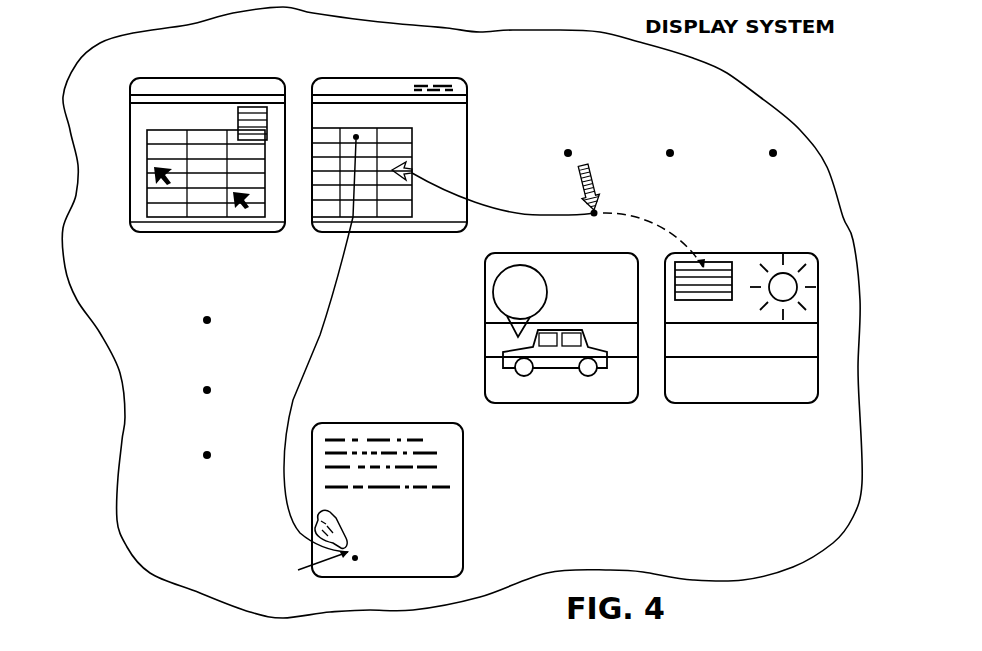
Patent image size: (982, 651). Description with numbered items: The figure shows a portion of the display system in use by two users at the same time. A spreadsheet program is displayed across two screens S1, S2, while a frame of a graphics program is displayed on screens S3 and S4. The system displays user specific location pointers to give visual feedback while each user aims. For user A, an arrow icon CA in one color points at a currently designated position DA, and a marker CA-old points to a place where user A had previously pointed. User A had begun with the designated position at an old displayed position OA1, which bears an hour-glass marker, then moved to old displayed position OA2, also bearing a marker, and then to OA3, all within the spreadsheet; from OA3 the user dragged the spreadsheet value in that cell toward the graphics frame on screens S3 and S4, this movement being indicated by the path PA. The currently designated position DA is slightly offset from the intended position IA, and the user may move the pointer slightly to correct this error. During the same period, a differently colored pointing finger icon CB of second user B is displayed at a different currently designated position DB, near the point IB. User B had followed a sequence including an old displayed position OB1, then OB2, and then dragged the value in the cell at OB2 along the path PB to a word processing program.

The screen S1 is at (166, 78).
The screen S2 is at (421, 70).
The screen S3 is at (600, 405).
The screen S4 is at (772, 405).
The old displayed position OA1 is at (173, 183).
The old displayed position OA2 is at (253, 135).
The old displayed position OA3 is at (406, 183).
The old displayed position OB1 is at (247, 214).
The old displayed position OB2 is at (356, 137).
The arrow icon CA is at (587, 164).
The marker CA-old is at (413, 168).
The currently designated position DA is at (600, 211).
The intended position IA is at (598, 216).
The path A of cursor movement PA is at (512, 217).
The path B of cursor movement PB is at (321, 335).
The pointing finger icon CB is at (336, 529).
The input point B IB is at (361, 557).
The currently designated position DB is at (308, 567).